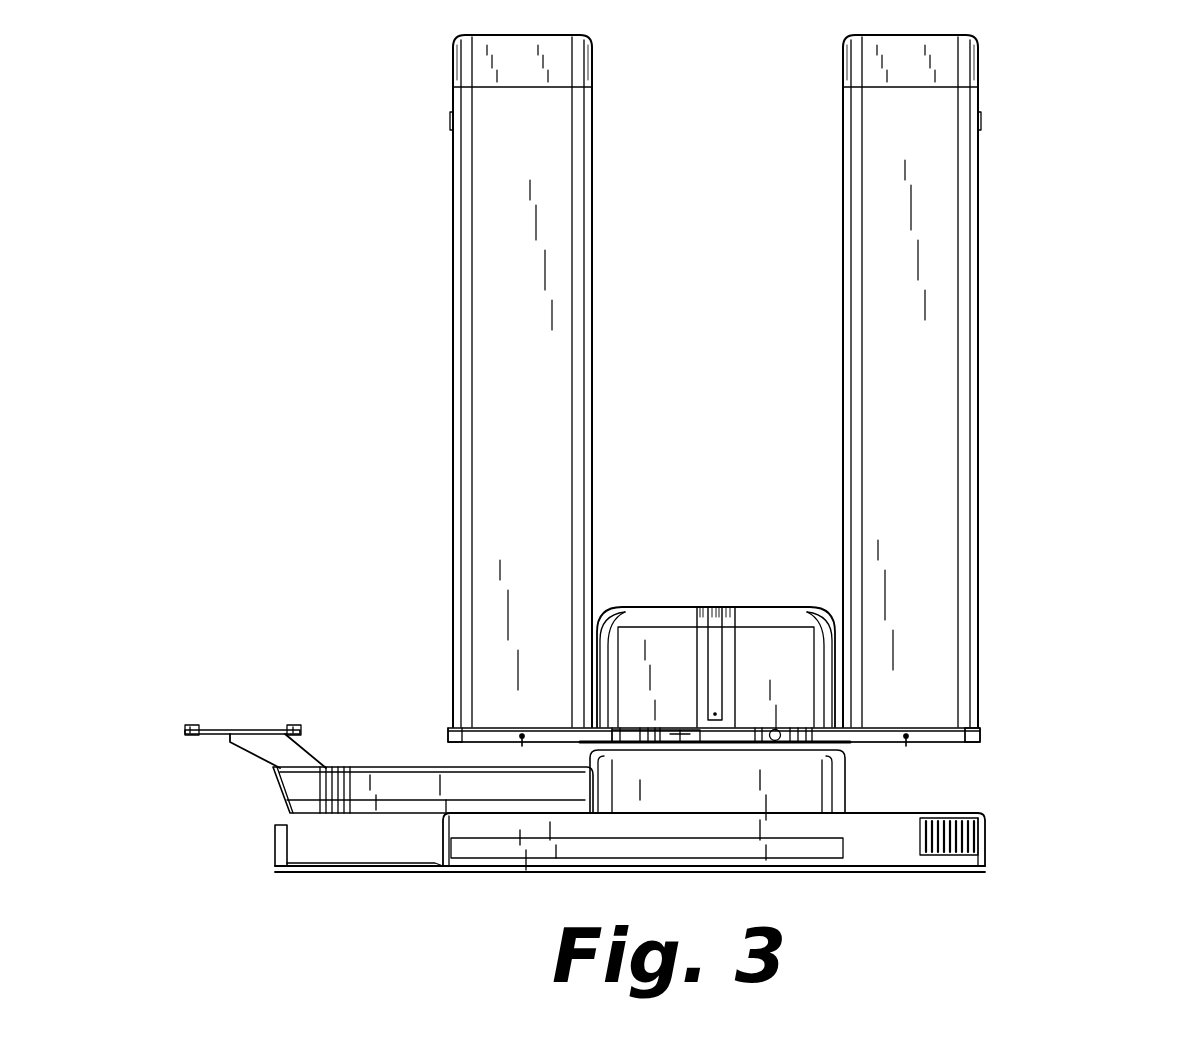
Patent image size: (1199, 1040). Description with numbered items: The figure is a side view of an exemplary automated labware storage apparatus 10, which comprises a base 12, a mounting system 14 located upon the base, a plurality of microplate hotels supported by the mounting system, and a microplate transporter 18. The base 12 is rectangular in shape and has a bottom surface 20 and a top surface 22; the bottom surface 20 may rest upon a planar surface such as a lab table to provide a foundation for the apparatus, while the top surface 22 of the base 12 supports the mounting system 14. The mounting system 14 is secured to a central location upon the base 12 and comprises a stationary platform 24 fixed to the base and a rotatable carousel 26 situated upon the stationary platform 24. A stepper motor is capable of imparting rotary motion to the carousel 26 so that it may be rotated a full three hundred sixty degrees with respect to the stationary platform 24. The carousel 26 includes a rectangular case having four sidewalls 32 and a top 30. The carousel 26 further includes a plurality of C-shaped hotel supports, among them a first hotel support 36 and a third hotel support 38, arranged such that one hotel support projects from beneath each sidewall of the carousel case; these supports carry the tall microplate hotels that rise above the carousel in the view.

The automated labware storage apparatus 10 is at (358, 442).
The base 12 is at (983, 838).
The mounting system 14 is at (795, 696).
The microplate transporter 18 is at (265, 753).
The bottom surface 20 is at (433, 790).
The top surface 22 is at (848, 872).
The stationary platform 24 is at (838, 780).
The rotatable carousel 26 is at (678, 730).
The top 30 is at (713, 590).
The sidewalls 32 is at (790, 673).
The first C-shaped hotel support 36 is at (448, 741).
The third C-shaped hotel support 38 is at (983, 738).